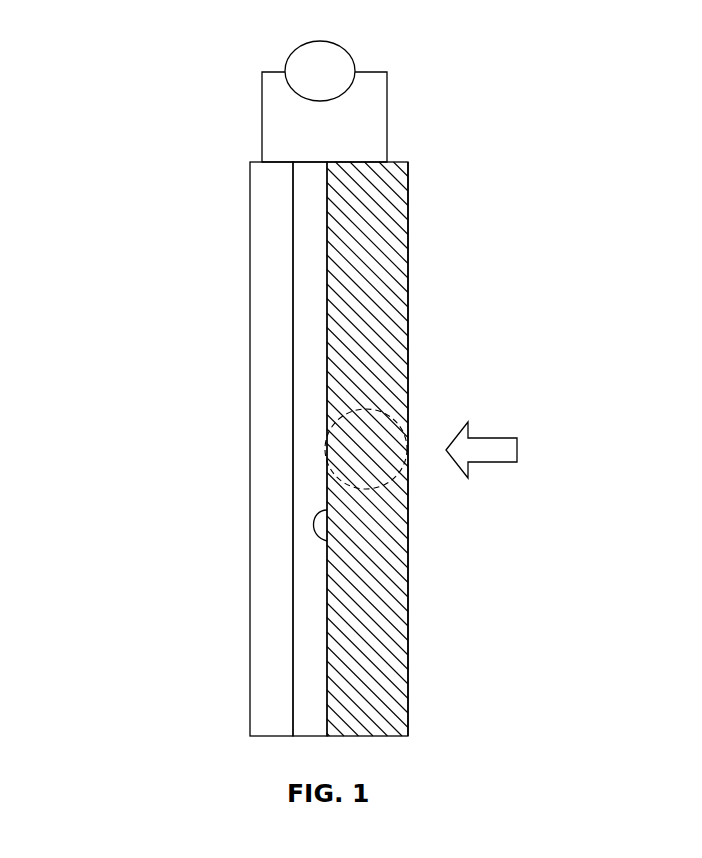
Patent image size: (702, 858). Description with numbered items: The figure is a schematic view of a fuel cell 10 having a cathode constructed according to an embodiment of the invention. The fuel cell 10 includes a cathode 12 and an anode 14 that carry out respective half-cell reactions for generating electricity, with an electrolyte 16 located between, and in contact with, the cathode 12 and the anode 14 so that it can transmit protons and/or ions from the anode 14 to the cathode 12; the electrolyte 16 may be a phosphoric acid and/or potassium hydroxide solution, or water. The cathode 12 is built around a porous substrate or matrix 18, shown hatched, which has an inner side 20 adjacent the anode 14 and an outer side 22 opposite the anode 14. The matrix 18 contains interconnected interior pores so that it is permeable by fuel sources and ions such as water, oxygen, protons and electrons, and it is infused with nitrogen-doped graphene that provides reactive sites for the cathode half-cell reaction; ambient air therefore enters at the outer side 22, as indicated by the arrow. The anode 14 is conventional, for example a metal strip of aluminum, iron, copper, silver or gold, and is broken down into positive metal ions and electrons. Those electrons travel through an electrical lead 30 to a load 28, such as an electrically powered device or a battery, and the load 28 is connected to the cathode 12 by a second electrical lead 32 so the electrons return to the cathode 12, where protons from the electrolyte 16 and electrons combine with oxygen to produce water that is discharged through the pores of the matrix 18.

The fuel cell 10 is at (122, 84).
The cathode 12 is at (452, 319).
The anode 14 is at (272, 441).
The electrolyte 16 is at (303, 357).
The porous substrate or matrix 18 is at (412, 534).
The inner side 20 is at (327, 541).
The outer side 22 is at (407, 670).
The load 28 is at (320, 41).
The electrical lead 30 is at (262, 117).
The electrical lead 32 is at (387, 117).